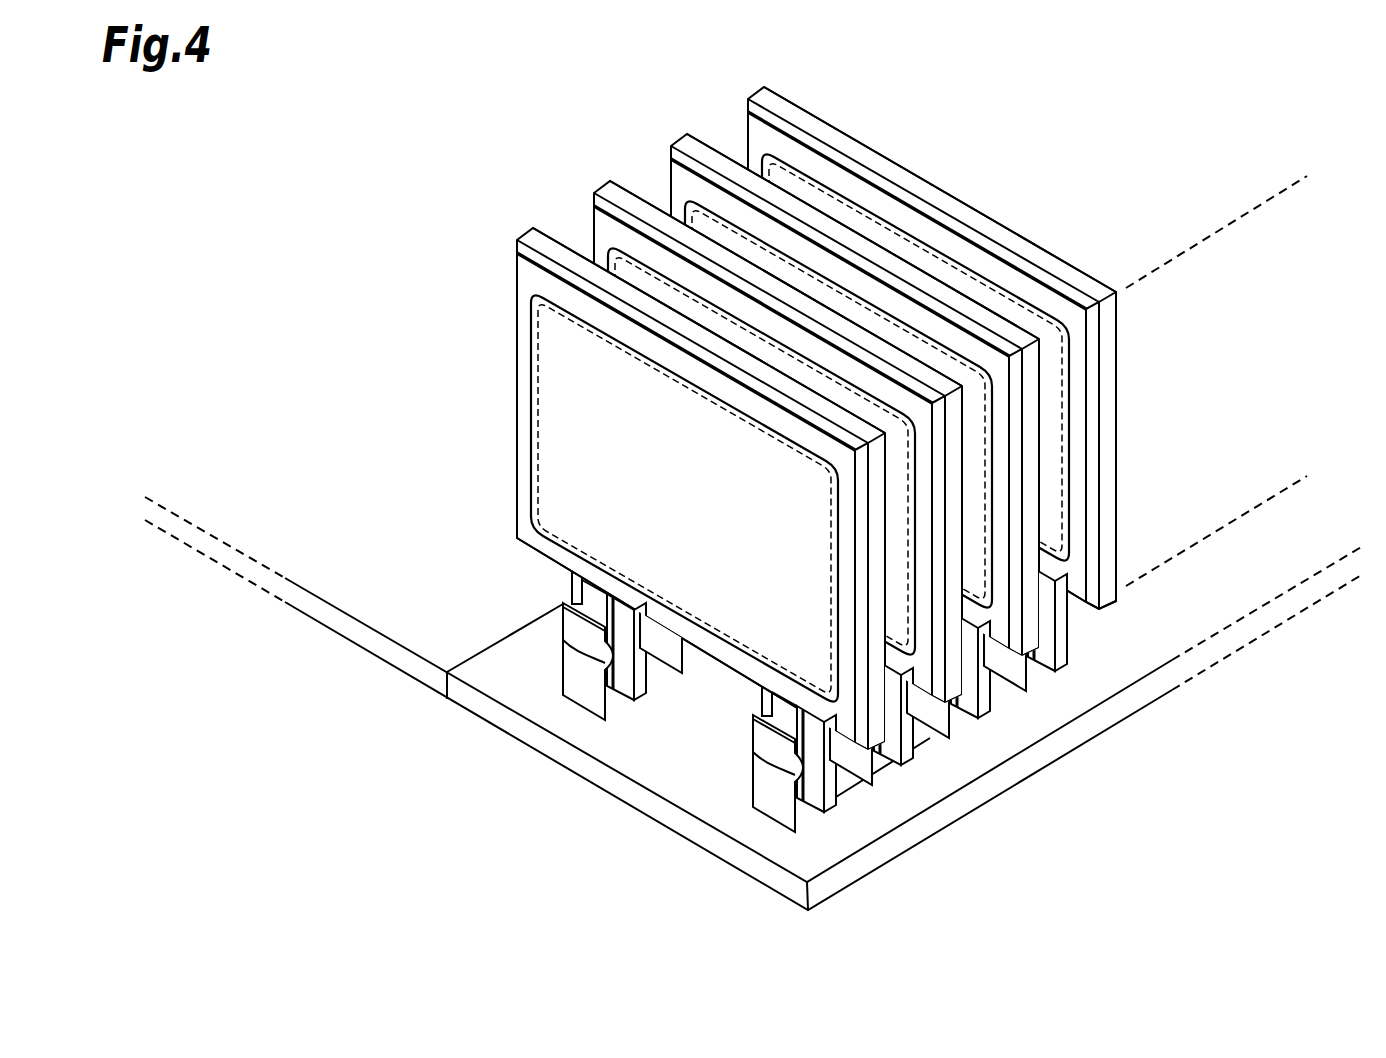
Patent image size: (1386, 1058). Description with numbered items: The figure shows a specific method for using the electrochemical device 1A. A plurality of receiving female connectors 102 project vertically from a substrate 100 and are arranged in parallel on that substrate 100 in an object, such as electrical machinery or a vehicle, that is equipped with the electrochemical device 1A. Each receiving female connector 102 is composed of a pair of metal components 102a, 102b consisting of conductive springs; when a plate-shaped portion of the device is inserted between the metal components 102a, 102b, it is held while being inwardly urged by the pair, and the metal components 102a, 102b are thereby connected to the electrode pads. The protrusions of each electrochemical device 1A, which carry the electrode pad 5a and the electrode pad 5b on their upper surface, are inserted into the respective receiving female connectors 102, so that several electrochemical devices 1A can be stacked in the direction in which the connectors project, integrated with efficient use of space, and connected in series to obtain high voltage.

The electrochemical device 1A is at (492, 290).
The electrode pad 5a is at (821, 790).
The electrode pad 5b is at (572, 598).
The substrate 100 is at (980, 794).
The receiving female connector 102 is at (794, 719).
The metal component 102a is at (577, 672).
The metal component 102b is at (648, 697).